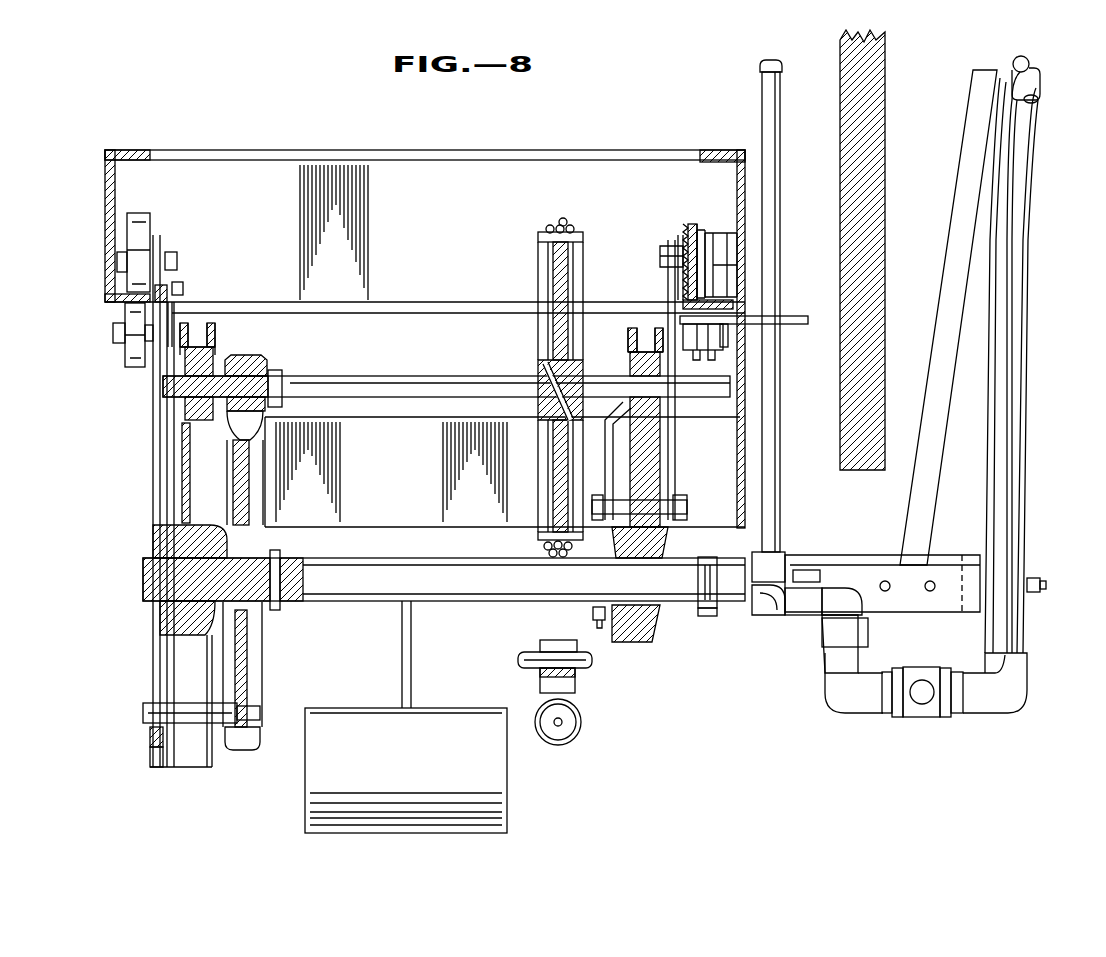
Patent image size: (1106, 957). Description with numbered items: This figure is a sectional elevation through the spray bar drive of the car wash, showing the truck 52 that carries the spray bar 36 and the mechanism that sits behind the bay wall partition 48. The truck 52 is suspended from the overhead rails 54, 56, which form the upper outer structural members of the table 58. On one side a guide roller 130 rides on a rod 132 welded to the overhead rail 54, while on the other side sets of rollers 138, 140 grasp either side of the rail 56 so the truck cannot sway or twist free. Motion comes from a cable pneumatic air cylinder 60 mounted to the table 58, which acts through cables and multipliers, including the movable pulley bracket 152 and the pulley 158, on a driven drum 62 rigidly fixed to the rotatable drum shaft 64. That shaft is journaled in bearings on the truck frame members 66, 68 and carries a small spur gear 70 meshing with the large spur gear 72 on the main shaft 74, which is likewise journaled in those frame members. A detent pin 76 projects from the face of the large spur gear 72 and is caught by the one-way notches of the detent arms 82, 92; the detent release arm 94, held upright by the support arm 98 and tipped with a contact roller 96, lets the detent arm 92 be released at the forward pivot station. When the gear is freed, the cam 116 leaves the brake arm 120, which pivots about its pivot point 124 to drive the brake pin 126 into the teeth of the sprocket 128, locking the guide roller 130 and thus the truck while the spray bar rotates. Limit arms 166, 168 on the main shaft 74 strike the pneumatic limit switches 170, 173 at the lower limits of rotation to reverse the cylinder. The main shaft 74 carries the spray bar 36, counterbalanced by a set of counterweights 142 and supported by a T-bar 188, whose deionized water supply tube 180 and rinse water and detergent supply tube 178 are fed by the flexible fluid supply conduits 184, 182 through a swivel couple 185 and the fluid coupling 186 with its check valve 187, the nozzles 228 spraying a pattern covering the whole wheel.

The spray bar 36 is at (1026, 313).
The partition 48 is at (886, 260).
The truck 52 is at (442, 352).
The overhead rail 54 is at (745, 316).
The overhead rail 56 is at (117, 304).
The table 58 is at (121, 131).
The cable pneumatic air cylinder 60 is at (582, 719).
The driven drum 62 is at (540, 257).
The rotatable drum shaft 64 is at (485, 385).
The truck frame member 66 is at (182, 470).
The truck frame member 68 is at (660, 457).
The small spur gear 70 is at (242, 357).
The large spur gear 72 is at (256, 504).
The main shaft 74 is at (389, 565).
The detent pin 76 is at (182, 705).
The detent arm 82 is at (150, 736).
The detent arm 92 is at (170, 748).
The detent release arm 94 is at (160, 502).
The contact roller 96 is at (184, 283).
The support arm 98 is at (196, 315).
The cam 116 is at (592, 620).
The brake arm 120 is at (668, 287).
The pivot point 124 is at (645, 500).
The brake pin 126 is at (680, 245).
The sprocket 128 is at (694, 226).
The guide roller 130 is at (722, 238).
The rod 132 is at (724, 270).
The set of rollers 138 is at (138, 230).
The set of rollers 140 is at (130, 368).
The counterweights 142 is at (508, 777).
The pulley bracket 152 is at (540, 686).
The pulley 158 is at (526, 654).
The limit arm 166 is at (708, 560).
The limit arm 168 is at (712, 616).
The pneumatic limit switch 170 is at (720, 362).
The pneumatic limit switch 173 is at (702, 352).
The rinse water and detergent supply tube 178 is at (1033, 116).
The deionized water supply tube 180 is at (1041, 78).
The flexible fluid supply conduit 182 is at (762, 82).
The flexible fluid supply conduit 184 is at (760, 66).
The swivel couple 185 is at (805, 618).
The fluid coupling 186 is at (873, 713).
The check valve 187 is at (922, 715).
The T-bar 188 is at (995, 258).
The nozzles 228 is at (1036, 584).